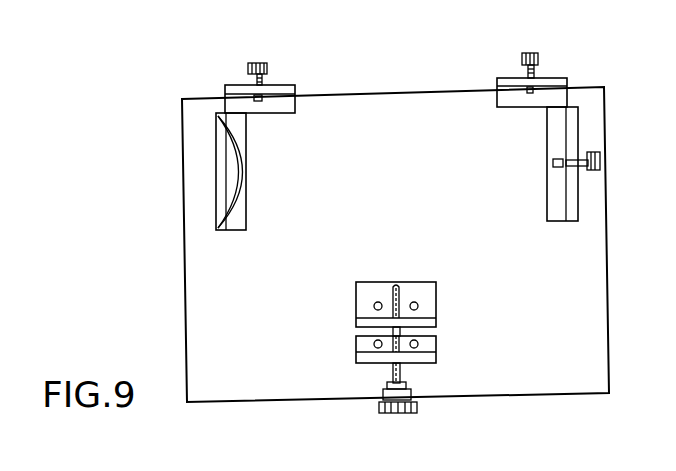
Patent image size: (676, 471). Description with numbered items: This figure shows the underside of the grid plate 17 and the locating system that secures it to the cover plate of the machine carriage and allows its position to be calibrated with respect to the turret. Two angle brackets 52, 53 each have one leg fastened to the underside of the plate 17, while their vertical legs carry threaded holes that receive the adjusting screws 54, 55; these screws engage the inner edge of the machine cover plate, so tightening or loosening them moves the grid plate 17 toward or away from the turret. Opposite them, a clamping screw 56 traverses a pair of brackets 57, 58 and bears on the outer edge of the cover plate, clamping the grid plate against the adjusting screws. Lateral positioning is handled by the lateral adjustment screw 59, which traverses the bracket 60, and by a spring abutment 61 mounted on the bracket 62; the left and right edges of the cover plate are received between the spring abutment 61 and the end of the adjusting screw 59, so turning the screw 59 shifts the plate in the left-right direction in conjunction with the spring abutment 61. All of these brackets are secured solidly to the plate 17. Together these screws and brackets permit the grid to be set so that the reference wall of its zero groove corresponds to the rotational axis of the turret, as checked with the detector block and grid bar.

The grid plate 17 is at (609, 285).
The angle bracket 52 is at (295, 93).
The angle bracket 53 is at (568, 80).
The adjusting screw 54 is at (263, 62).
The adjusting screw 55 is at (535, 52).
The clamping screw 56 is at (400, 413).
The bracket 57 is at (437, 320).
The bracket 58 is at (437, 358).
The lateral adjustment screw 59 is at (601, 160).
The bracket 60 is at (578, 128).
The spring abutment 61 is at (243, 166).
The bracket 62 is at (247, 216).